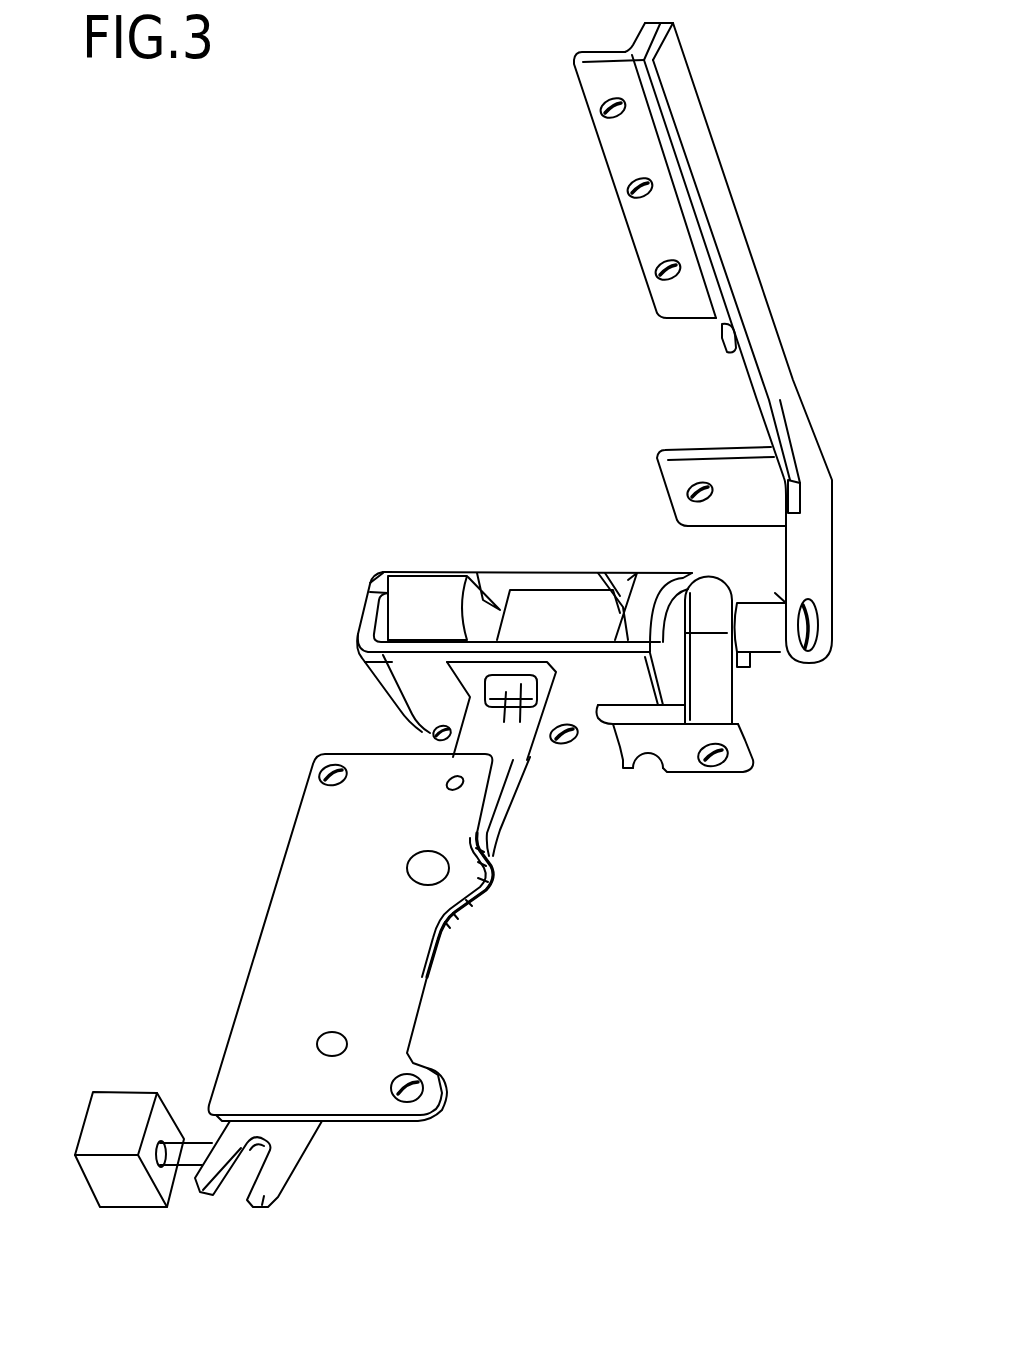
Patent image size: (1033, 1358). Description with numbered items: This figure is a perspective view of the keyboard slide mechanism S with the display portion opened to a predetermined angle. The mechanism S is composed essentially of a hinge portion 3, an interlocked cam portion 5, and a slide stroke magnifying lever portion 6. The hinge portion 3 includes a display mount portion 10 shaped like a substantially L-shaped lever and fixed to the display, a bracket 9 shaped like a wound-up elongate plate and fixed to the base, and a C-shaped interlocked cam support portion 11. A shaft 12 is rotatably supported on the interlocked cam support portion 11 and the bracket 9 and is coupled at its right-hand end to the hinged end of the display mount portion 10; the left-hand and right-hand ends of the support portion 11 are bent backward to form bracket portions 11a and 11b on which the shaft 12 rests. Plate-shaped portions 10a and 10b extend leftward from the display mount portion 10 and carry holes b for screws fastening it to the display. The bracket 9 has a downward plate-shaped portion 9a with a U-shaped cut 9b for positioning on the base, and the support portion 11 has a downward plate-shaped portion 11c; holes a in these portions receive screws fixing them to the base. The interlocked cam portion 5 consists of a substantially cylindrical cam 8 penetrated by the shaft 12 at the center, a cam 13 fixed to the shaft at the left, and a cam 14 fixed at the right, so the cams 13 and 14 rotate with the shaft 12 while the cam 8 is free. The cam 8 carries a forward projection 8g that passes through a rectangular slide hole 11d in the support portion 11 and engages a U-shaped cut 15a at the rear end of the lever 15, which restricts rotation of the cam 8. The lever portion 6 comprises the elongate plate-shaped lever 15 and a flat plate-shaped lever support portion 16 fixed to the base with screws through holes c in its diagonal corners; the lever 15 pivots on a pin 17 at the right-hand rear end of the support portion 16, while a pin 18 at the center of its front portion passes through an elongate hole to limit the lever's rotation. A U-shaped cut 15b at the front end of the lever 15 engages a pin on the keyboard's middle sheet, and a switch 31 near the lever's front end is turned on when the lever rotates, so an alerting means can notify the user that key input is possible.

The keyboard slide mechanism S is at (330, 226).
The hinge portion 3 is at (760, 690).
The interlocked cam portion 5 is at (498, 551).
The slide stroke magnifying lever portion 6 is at (198, 983).
The cam 8 is at (545, 578).
The projection 8g is at (522, 725).
The bracket 9 is at (715, 586).
The plate-shaped portion 9a is at (687, 762).
The U-shaped cut 9b is at (664, 770).
The display mount portion 10 is at (720, 195).
The plate-shaped portion 10a is at (697, 465).
The plate-shaped portion 10b is at (588, 70).
The interlocked cam support portion 11 is at (383, 661).
The bracket portion 11a is at (373, 605).
The bracket portion 11b is at (687, 581).
The plate-shaped portion 11c is at (593, 740).
The slide hole 11d is at (440, 678).
The shaft 12 is at (760, 642).
The cam 13 is at (422, 590).
The cam 14 is at (647, 581).
The lever 15 is at (497, 765).
The U-shaped cut 15a is at (507, 705).
The U-shaped cut 15b is at (262, 1158).
The lever support portion 16 is at (287, 882).
The pin 17 is at (433, 870).
The pin 18 is at (330, 1045).
The switch 31 is at (100, 1122).
The holes a is at (437, 735).
The holes b is at (655, 270).
The holes c is at (330, 775).